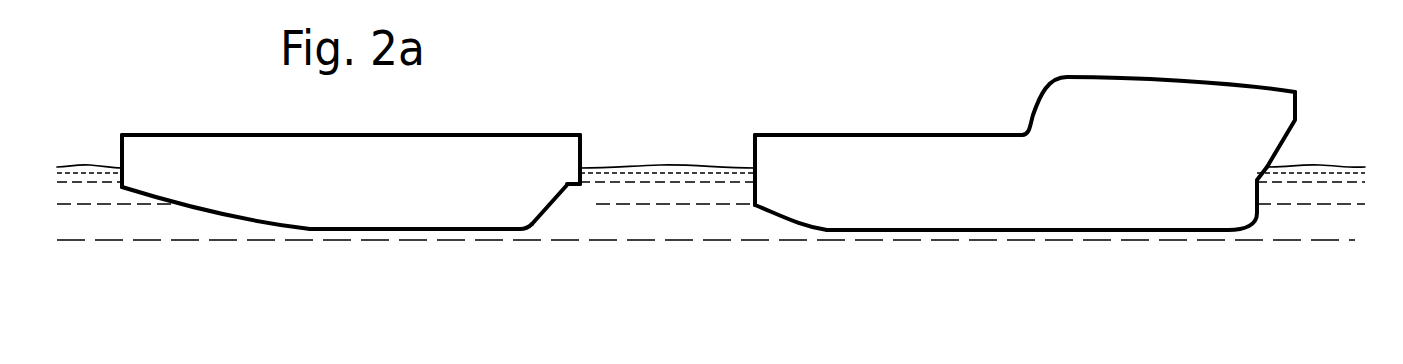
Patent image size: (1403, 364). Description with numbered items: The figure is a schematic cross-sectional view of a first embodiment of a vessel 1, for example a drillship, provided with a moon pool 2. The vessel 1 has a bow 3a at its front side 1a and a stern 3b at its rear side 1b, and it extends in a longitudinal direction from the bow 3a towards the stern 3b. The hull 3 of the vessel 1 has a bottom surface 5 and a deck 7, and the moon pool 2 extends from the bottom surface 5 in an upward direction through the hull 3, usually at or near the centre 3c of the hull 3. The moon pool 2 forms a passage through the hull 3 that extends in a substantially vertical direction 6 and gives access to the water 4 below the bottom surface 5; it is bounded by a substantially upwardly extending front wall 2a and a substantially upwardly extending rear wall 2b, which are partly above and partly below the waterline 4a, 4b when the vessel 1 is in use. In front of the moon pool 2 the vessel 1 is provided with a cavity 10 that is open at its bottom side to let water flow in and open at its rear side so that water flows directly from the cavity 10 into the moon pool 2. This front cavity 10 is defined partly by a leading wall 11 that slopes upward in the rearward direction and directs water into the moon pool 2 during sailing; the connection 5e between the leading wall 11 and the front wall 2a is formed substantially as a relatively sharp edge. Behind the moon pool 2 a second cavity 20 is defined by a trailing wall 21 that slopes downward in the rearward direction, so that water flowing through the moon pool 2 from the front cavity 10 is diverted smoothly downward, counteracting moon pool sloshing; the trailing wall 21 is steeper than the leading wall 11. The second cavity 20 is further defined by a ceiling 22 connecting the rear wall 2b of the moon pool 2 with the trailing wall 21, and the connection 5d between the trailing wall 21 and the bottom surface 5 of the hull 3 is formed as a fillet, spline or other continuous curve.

The vessel 1 is at (985, 90).
The front side 1a is at (1307, 100).
The rear side 1b is at (117, 137).
The moon pool 2 is at (681, 112).
The front wall 2a is at (753, 153).
The rear wall 2b is at (582, 152).
The hull 3 is at (255, 153).
The bow 3a is at (1268, 210).
The stern 3b is at (150, 197).
The centre of the hull 3c is at (585, 107).
The water 4 is at (668, 274).
The waterline 4a is at (1317, 165).
The waterline 4b is at (707, 167).
The bottom surface 5 is at (423, 232).
The connection 5d is at (537, 230).
The connection 5e is at (754, 207).
The vertical direction 6 is at (657, 145).
The deck 7 is at (901, 135).
The cavity 10 is at (768, 213).
The leading wall 11 is at (783, 212).
The second cavity 20 is at (563, 210).
The trailing wall 21 is at (552, 203).
The ceiling 22 is at (568, 185).